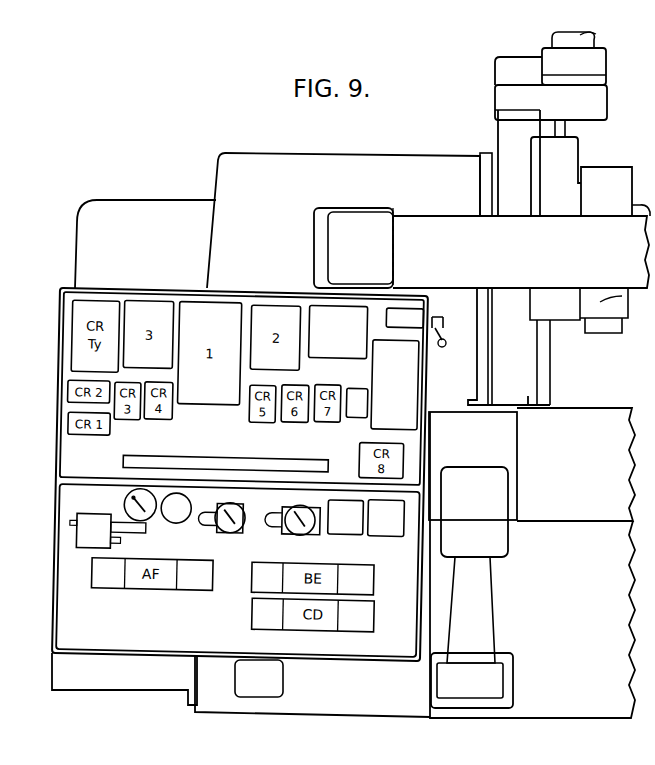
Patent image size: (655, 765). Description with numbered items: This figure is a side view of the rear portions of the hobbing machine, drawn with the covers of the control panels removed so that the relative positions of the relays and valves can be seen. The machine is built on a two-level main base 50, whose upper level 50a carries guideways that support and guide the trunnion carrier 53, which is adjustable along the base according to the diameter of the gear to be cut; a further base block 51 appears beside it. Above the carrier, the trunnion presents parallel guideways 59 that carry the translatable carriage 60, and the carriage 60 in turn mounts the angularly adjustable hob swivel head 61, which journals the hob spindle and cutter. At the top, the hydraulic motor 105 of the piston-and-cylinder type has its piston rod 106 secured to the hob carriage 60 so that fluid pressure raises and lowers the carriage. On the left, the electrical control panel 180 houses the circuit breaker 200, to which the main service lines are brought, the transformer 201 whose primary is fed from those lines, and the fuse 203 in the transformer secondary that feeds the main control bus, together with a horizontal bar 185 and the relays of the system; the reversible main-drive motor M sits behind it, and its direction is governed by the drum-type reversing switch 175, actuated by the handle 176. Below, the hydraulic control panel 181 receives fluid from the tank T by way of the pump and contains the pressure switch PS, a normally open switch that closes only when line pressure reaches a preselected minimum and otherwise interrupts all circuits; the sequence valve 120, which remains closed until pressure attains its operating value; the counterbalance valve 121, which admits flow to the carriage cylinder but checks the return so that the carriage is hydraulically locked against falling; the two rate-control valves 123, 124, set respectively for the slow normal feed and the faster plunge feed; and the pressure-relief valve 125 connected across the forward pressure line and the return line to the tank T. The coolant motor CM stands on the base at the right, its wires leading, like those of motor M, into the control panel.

The hydraulic motor 105 is at (586, 39).
The piston rod 106 is at (570, 130).
The parallel guideways 59 is at (545, 126).
The translatable carriage 60 is at (556, 176).
The hob swivel head 61 is at (601, 178).
The trunnion carrier 53 is at (378, 279).
The upper level of main base 50a is at (473, 466).
The base block 51 is at (576, 464).
The main base 50 is at (532, 565).
The handle 176 is at (444, 337).
The reversing switch 175 is at (404, 318).
The circuit breaker 200 is at (395, 385).
The transformer 201 is at (338, 331).
The fuse 203 is at (359, 383).
The bar 185 is at (287, 461).
The electrical control panel 180 is at (60, 288).
The hydraulic control panel 181 is at (55, 559).
The pressure-relief valve 125 is at (185, 514).
The sequence valve 120 is at (235, 524).
The counterbalance valve 121 is at (305, 525).
The rate-control valve 123 is at (346, 517).
The rate-control valve 124 is at (386, 518).
The tank T is at (58, 676).
The main-drive motor M is at (145, 244).
The coolant motor CM is at (472, 587).
The pressure switch PS is at (107, 531).